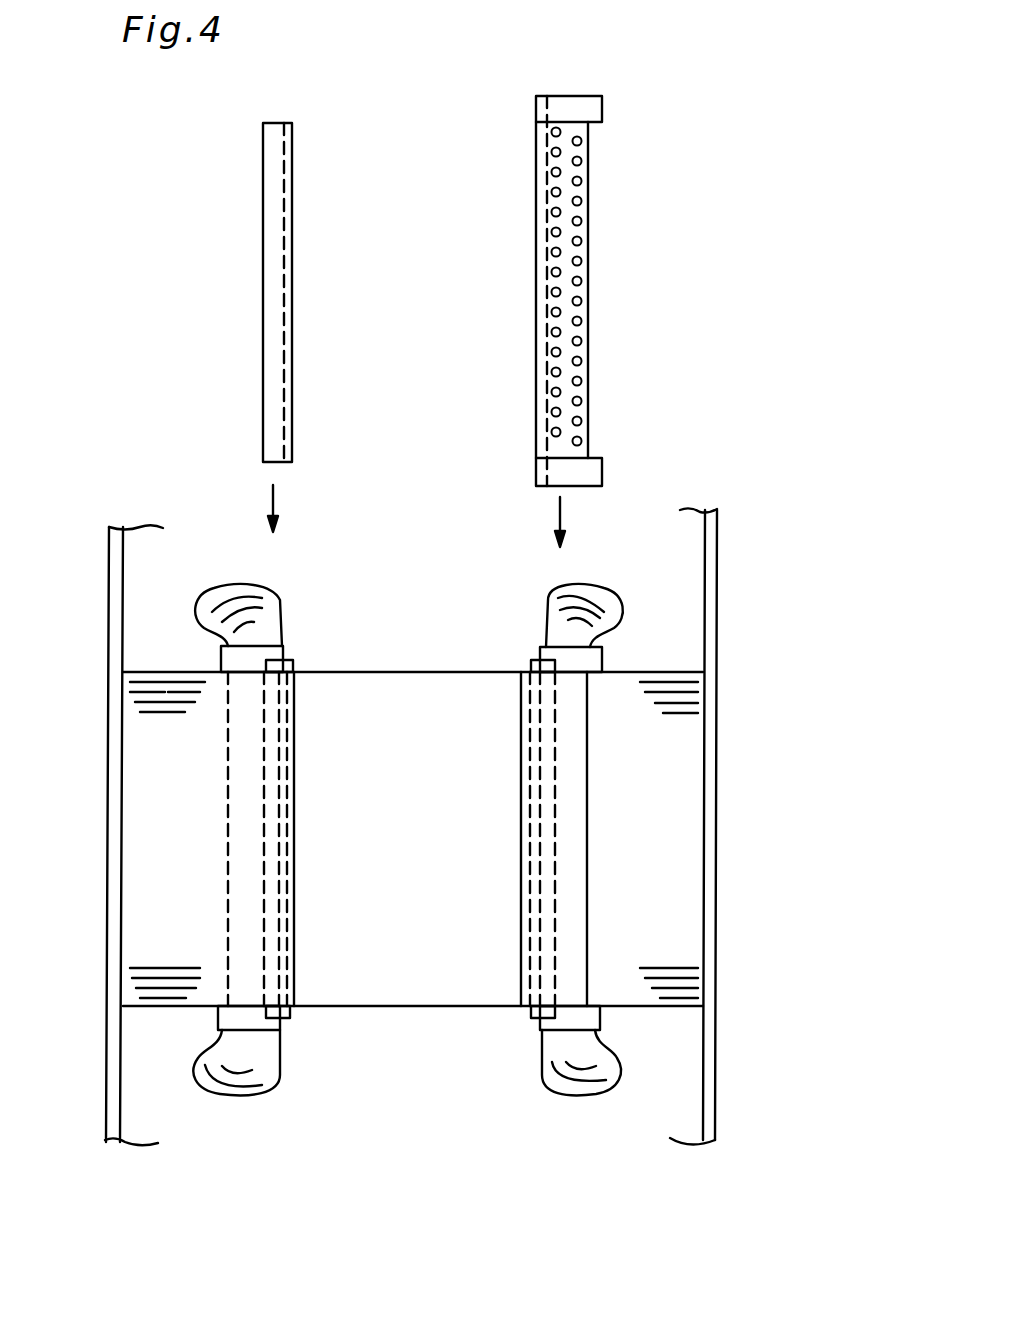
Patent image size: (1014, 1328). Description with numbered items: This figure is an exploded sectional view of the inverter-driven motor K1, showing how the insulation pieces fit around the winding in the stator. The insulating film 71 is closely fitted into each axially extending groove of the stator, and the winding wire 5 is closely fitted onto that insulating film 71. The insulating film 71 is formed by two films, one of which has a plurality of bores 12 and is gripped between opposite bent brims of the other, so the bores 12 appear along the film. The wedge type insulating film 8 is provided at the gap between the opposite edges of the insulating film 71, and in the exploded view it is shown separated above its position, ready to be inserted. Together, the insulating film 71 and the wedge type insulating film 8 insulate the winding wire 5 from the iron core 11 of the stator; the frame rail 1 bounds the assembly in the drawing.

The frame rail 1 is at (717, 528).
The winding wire 5 is at (570, 610).
The wedge type insulating film 8 is at (275, 228).
The iron core 11 is at (660, 768).
The bores 12 is at (578, 280).
The insulating film 71 is at (572, 228).
The inverter-driven motor K1 is at (738, 366).